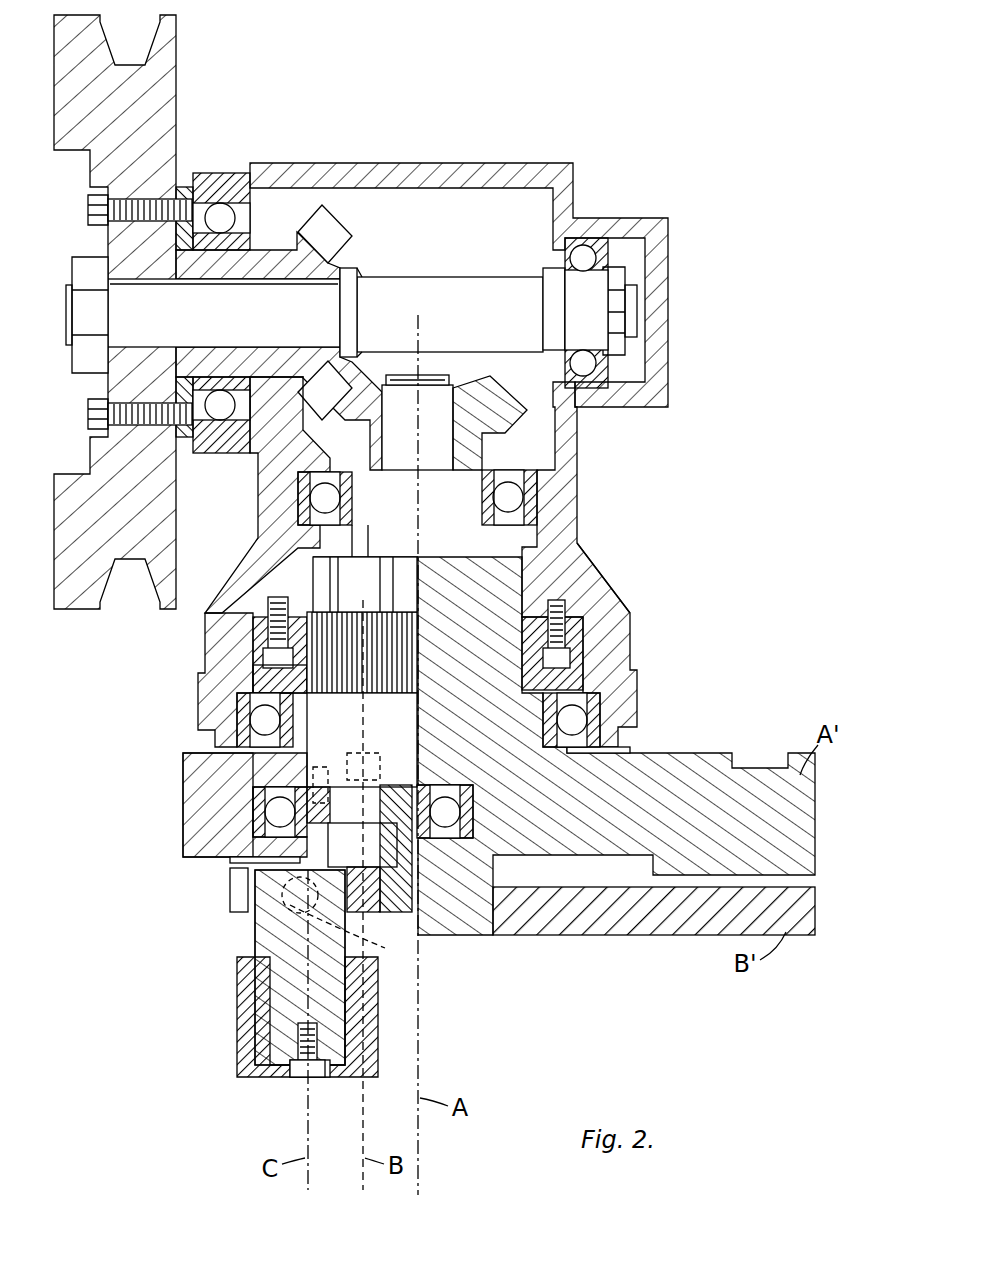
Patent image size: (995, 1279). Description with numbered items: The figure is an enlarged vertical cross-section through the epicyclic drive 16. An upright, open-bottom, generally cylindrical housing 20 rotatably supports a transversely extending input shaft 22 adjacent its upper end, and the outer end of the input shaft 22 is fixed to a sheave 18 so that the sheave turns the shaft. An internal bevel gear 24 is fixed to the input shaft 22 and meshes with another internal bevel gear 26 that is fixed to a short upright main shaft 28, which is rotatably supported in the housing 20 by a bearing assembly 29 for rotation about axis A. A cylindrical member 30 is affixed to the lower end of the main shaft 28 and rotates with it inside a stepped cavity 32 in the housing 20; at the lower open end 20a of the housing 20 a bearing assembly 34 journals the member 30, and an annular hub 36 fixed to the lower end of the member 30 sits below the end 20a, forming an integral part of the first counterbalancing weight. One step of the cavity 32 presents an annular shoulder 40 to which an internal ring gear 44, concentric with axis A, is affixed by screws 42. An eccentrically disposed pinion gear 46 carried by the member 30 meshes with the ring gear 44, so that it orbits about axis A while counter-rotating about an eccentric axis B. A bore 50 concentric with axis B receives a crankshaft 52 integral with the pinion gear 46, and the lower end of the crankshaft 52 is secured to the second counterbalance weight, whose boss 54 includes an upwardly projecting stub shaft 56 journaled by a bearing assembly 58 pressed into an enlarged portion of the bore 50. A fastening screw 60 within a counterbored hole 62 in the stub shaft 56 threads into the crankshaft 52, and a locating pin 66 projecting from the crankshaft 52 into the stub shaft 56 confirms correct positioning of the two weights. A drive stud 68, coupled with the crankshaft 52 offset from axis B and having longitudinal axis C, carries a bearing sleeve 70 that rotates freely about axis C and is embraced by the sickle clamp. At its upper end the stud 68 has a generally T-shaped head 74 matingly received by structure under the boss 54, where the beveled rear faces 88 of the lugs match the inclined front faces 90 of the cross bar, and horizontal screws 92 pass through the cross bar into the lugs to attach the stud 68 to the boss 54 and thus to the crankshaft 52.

The epicyclic drive 16 is at (587, 150).
The sheave 18 is at (170, 58).
The housing 20 is at (570, 477).
The lower open end 20a is at (620, 752).
The input shaft 22 is at (122, 328).
The internal bevel gear 24 is at (333, 230).
The internal bevel gear 26 is at (510, 417).
The main shaft 28 is at (453, 390).
The bearing assembly 29 is at (530, 508).
The cylindrical member 30 is at (513, 568).
The cavity 32 is at (530, 593).
The bearing assembly 34 is at (595, 700).
The annular hub 36 is at (193, 828).
The annular shoulder 40 is at (257, 626).
The screws 42 is at (258, 637).
The internal ring gear 44 is at (260, 657).
The pinion gear 46 is at (325, 678).
The bore 50 is at (307, 745).
The crankshaft 52 is at (323, 707).
The boss 54 is at (228, 860).
The stub shaft 56 is at (400, 792).
The bearing assembly 58 is at (258, 800).
The fastening screw 60 is at (365, 855).
The counterbored hole 62 is at (350, 866).
The locating pin 66 is at (323, 797).
The drive stud 68 is at (282, 1010).
The bearing sleeve 70 is at (250, 995).
The T-shaped head 74 is at (245, 920).
The rear faces 88 is at (353, 935).
The front faces 90 is at (265, 893).
The screws 92 is at (240, 880).